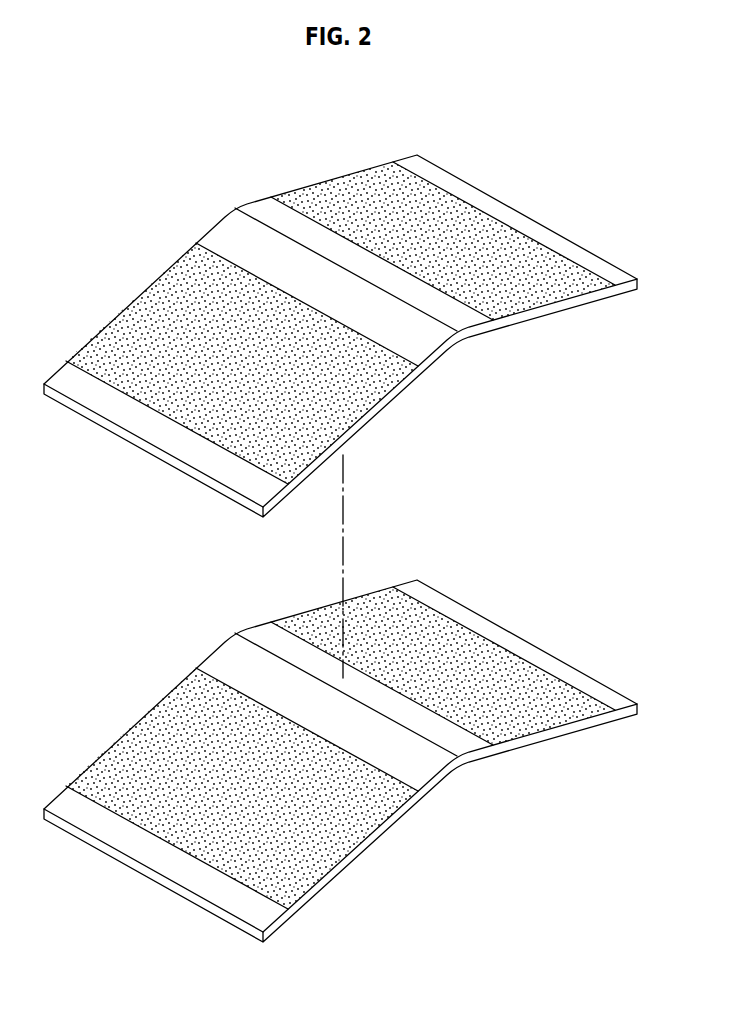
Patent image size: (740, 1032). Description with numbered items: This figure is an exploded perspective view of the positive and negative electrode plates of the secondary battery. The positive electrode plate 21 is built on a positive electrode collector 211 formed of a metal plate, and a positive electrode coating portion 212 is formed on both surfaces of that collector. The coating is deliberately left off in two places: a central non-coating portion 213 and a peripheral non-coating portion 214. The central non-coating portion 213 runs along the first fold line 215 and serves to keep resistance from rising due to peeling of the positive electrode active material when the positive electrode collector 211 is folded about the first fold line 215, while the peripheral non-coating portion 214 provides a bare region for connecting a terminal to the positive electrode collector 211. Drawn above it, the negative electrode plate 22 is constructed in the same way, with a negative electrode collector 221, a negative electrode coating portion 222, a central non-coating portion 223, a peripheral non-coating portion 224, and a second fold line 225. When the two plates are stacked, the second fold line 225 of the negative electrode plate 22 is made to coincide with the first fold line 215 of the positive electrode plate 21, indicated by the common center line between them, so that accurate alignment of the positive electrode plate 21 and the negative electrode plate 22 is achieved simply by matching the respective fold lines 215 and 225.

The negative electrode plate 22 is at (122, 468).
The negative electrode collector 221 is at (273, 502).
The negative electrode coating portion 222 is at (445, 195).
The central non-coating portion 223 is at (227, 233).
The peripheral non-coating portion 224 is at (515, 215).
The second fold line 225 is at (257, 218).
The positive electrode plate 21 is at (122, 893).
The positive electrode collector 211 is at (273, 927).
The positive electrode coating portion 212 is at (445, 620).
The central non-coating portion 213 is at (227, 658).
The peripheral non-coating portion 214 is at (515, 640).
The first fold line 215 is at (257, 643).